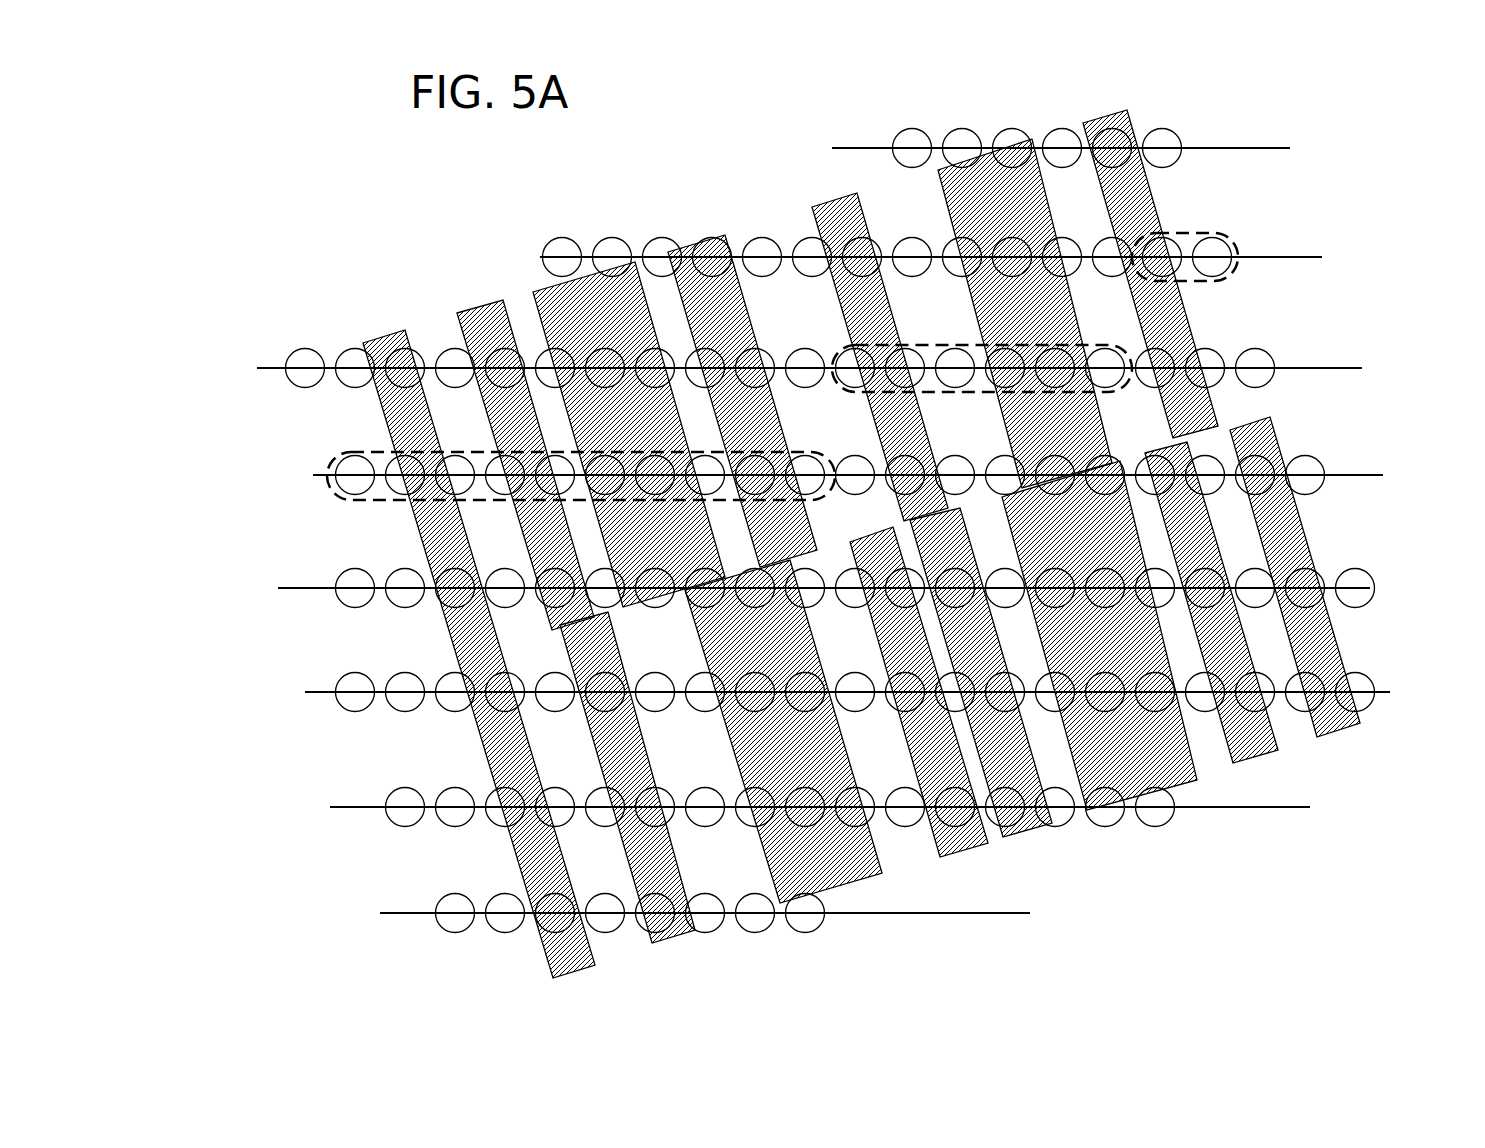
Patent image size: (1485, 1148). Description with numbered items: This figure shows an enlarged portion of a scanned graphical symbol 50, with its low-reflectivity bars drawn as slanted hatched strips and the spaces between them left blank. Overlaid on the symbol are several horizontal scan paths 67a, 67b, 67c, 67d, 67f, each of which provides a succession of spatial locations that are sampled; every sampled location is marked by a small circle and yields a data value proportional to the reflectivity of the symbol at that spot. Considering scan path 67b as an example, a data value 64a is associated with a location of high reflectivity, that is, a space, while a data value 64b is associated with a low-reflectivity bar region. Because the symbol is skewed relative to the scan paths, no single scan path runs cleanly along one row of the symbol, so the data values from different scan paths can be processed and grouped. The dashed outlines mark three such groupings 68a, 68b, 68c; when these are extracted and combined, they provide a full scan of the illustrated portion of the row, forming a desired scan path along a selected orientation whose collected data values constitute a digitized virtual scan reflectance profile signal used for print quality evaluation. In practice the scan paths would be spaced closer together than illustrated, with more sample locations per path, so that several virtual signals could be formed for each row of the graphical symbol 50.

The graphical symbol 50 is at (1180, 868).
The data value 64a is at (760, 250).
The data value 64b is at (1007, 245).
The scan path 67a is at (872, 147).
The scan path 67b is at (1307, 255).
The scan path 67c is at (1343, 367).
The scan path 67d is at (1350, 473).
The scan path 67f is at (323, 693).
The grouping 68a is at (330, 470).
The grouping 68b is at (850, 395).
The grouping 68c is at (1230, 278).